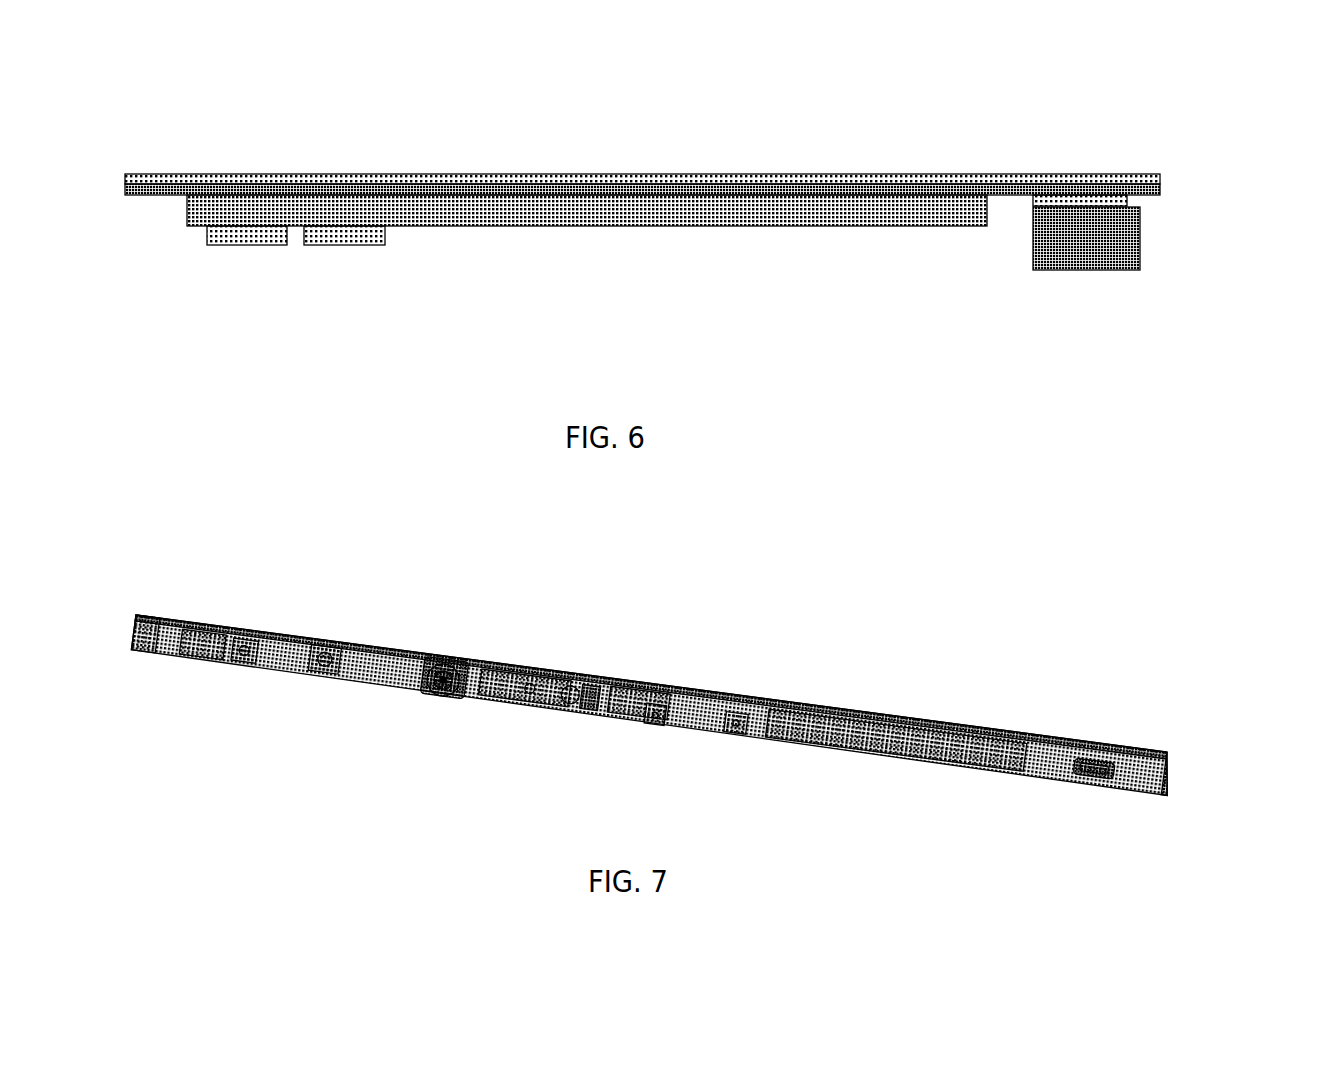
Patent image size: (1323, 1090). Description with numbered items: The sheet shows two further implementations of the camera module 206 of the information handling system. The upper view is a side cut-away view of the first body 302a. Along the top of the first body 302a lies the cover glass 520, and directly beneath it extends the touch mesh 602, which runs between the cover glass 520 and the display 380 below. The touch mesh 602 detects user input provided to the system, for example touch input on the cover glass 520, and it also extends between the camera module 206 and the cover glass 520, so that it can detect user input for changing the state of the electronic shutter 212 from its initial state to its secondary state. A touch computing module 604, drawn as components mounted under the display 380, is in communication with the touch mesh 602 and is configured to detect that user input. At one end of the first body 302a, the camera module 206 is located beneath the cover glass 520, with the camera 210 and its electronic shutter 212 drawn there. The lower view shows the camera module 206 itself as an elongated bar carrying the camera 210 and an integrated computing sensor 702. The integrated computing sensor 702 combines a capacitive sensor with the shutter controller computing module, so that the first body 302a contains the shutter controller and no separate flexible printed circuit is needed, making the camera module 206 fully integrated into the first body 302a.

In FIG. 6, the first body 302a is at (158, 60).
In FIG. 6, the cover glass 520 is at (902, 173).
In FIG. 6, the touch mesh 602 is at (950, 184).
In FIG. 6, the display 380 is at (835, 231).
In FIG. 6, the touch computing module 604 is at (365, 247).
In FIG. 6, the camera module 206 is at (1165, 182).
In FIG. 7, the camera module 206 is at (631, 646).
In FIG. 6, the electronic shutter 212 is at (1134, 201).
In FIG. 6, the camera 210 is at (1143, 253).
In FIG. 7, the camera 210 is at (444, 677).
In FIG. 7, the integrated computing sensor 702 is at (651, 705).